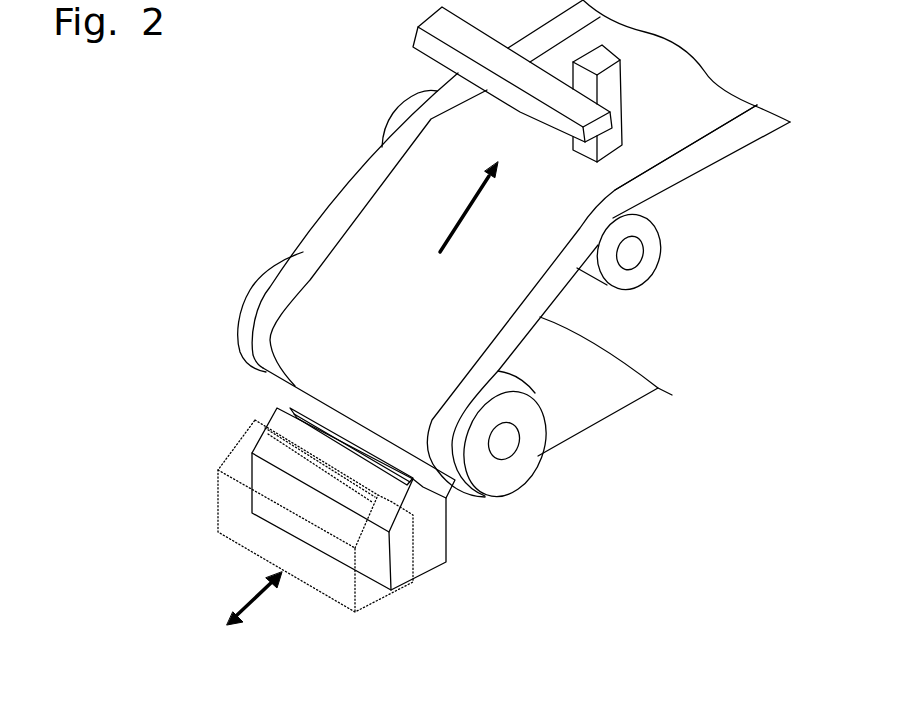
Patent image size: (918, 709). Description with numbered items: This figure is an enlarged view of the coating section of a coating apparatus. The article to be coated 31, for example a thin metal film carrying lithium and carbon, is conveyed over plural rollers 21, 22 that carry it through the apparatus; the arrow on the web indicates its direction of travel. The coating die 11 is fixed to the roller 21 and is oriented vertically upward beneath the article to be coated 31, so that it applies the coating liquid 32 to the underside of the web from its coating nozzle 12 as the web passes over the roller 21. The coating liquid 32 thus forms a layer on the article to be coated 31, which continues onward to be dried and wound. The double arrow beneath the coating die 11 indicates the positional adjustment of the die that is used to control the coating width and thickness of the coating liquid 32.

The coating die 11 is at (255, 419).
The coating nozzle 12 is at (292, 399).
The roller 21 is at (527, 413).
The roller 22 is at (625, 277).
The article to be coated 31 is at (682, 163).
The coating liquid 32 is at (693, 117).